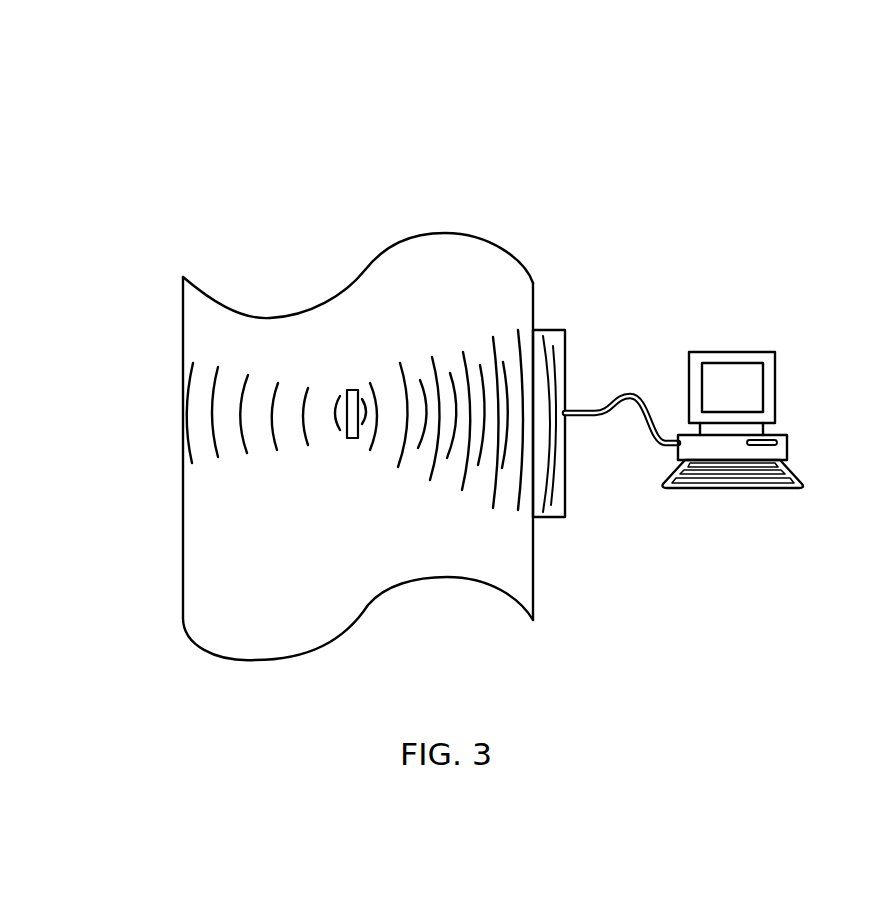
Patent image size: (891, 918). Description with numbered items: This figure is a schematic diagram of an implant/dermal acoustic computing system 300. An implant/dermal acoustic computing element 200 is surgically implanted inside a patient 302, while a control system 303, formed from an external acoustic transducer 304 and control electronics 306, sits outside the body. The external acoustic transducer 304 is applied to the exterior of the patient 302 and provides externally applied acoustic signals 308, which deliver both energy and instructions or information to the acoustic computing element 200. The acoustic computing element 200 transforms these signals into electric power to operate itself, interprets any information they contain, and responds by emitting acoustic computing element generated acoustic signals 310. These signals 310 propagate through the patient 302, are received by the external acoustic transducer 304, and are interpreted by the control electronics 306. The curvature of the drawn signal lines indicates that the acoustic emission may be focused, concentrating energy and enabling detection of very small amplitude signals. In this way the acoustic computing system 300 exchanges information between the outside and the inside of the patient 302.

The implant/dermal acoustic computing system 300 is at (312, 116).
The patient 302 is at (268, 597).
The implant/dermal acoustic computing element 200 is at (348, 443).
The acoustic computing element generated acoustic signals 310 is at (382, 390).
The externally applied acoustic signals 308 is at (497, 348).
The external acoustic transducer 304 is at (565, 522).
The control system 303 is at (866, 327).
The control electronics 306 is at (739, 492).